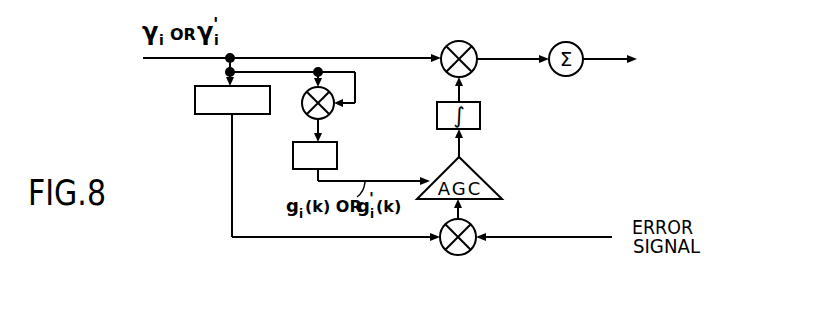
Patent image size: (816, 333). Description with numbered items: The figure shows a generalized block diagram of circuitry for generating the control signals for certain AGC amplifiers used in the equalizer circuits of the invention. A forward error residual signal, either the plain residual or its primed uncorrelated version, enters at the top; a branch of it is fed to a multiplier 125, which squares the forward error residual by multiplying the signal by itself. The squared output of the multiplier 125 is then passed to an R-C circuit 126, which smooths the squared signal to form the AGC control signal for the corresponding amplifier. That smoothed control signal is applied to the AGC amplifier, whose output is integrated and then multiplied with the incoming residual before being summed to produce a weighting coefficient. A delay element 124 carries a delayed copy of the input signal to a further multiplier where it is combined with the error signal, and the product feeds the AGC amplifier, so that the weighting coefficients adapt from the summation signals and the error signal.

The delay 124 is at (232, 98).
The multiplier 125 is at (330, 113).
The R-C circuit 126 is at (337, 157).